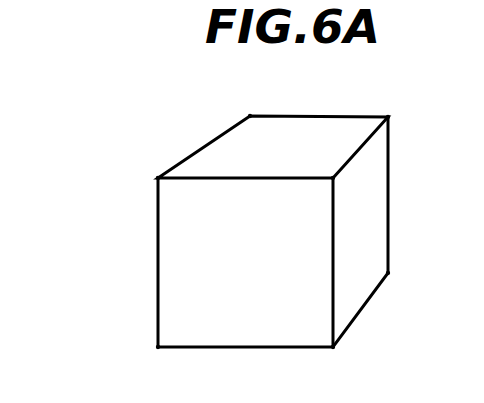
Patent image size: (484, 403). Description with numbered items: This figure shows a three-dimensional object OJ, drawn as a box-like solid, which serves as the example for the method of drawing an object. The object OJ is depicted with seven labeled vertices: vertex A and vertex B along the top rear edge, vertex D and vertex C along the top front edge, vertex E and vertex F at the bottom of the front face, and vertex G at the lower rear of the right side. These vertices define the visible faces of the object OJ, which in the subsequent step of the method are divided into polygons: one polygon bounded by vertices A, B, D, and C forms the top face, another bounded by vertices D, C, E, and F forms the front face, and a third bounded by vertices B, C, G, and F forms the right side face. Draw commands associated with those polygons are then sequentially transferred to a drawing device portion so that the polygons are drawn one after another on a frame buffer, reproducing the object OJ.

The 3D object OJ is at (158, 265).
The vertex A is at (247, 99).
The vertex B is at (396, 99).
The vertex C is at (322, 161).
The vertex D is at (142, 171).
The vertex E is at (142, 365).
The vertex F is at (333, 365).
The vertex G is at (402, 278).